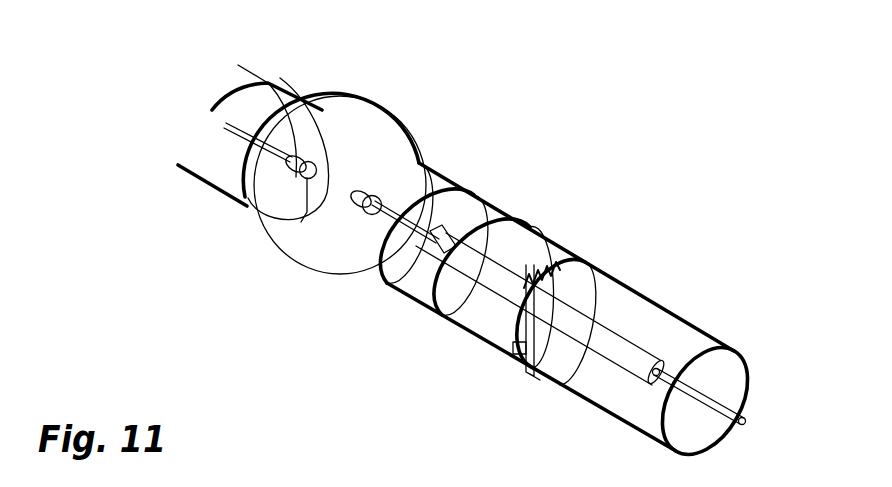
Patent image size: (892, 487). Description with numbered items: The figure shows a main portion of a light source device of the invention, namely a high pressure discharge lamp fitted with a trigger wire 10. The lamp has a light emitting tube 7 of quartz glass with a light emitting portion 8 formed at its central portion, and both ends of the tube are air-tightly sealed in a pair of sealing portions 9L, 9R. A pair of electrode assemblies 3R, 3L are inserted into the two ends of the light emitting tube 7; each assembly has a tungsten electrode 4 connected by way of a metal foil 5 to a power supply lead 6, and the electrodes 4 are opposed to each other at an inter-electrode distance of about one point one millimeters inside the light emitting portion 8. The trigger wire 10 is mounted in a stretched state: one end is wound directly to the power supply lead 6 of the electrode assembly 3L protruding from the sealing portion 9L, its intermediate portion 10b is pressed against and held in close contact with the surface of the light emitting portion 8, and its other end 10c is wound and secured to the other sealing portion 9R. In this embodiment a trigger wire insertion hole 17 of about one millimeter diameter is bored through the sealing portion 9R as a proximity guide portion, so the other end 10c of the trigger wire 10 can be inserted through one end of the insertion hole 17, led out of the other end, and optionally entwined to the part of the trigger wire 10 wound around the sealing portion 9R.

The electrode assembly 3L is at (229, 126).
The electrode assembly 3R is at (788, 100).
The tungsten electrode 4 is at (303, 222).
The metal foil 5 is at (602, 338).
The power supply lead 6 is at (748, 400).
The light emitting tube 7 is at (303, 269).
The light emitting portion 8 is at (325, 266).
The sealing portion 9L is at (228, 178).
The sealing portion 9R is at (610, 398).
The trigger wire 10 is at (230, 93).
The intermediate portion 10b is at (353, 110).
The other end 10c is at (553, 257).
The trigger wire insertion hole 17 is at (512, 350).